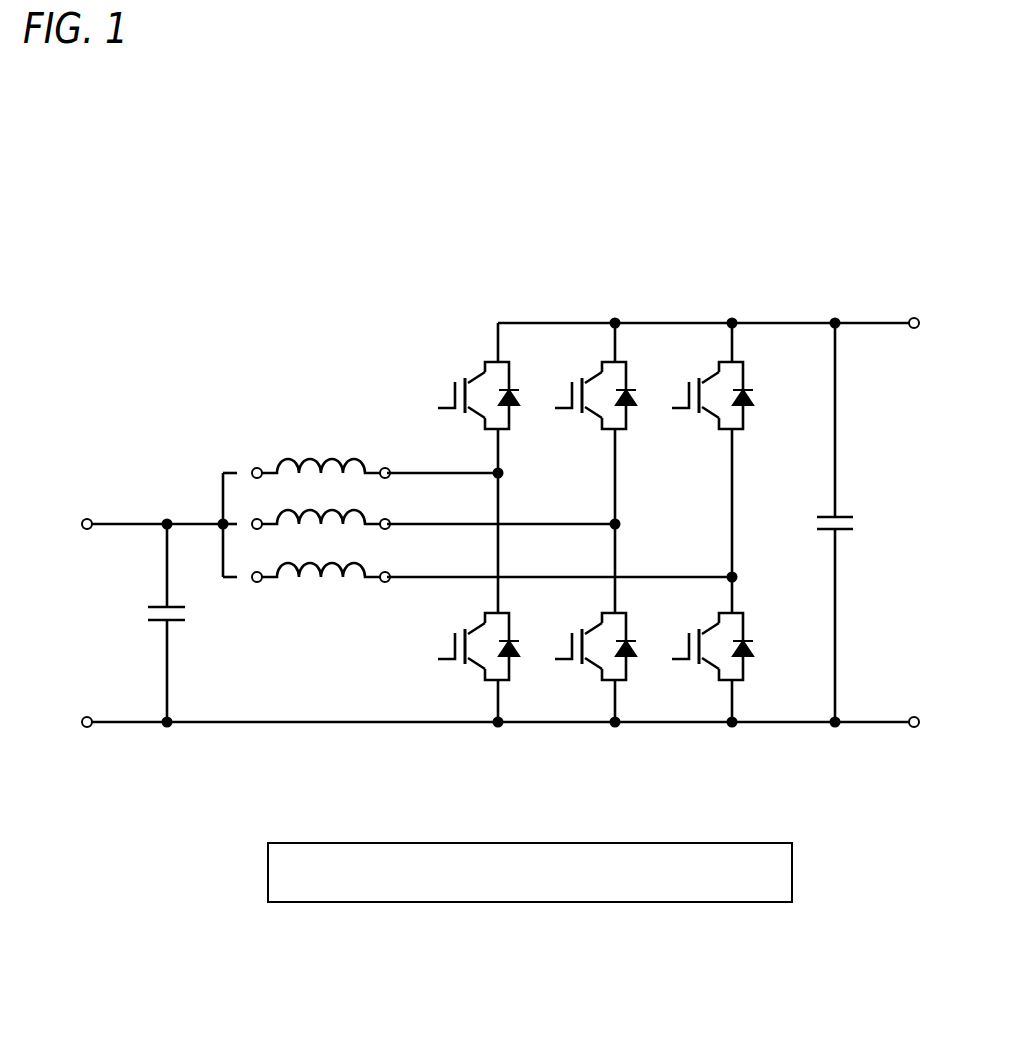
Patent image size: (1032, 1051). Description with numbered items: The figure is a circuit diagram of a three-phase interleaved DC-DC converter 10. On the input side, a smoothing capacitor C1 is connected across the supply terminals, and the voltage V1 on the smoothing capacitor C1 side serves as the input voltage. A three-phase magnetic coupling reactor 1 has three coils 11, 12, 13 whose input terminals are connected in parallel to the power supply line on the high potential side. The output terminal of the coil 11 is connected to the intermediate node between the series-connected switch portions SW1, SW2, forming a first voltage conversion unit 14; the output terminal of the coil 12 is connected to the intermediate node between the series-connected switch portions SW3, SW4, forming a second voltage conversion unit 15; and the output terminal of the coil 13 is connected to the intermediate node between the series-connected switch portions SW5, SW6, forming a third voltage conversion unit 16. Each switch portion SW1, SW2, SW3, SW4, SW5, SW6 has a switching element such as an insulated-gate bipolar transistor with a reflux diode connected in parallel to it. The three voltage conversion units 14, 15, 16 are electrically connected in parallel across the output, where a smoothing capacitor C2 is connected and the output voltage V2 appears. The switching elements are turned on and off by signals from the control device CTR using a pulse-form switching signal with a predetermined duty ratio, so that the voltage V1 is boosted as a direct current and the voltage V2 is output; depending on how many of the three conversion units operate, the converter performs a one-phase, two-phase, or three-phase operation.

The three-phase magnetic coupling reactor 1 is at (245, 415).
The three-phase interleaved DC-DC converter 10 is at (728, 160).
The coil 11 is at (332, 458).
The coil 12 is at (356, 508).
The coil 13 is at (342, 580).
The first voltage conversion unit 14 is at (472, 469).
The second voltage conversion unit 15 is at (577, 520).
The third voltage conversion unit 16 is at (593, 573).
The switch portion SW1 is at (472, 342).
The switch portion SW2 is at (472, 705).
The switch portion SW3 is at (588, 342).
The switch portion SW4 is at (588, 705).
The switch portion SW5 is at (700, 342).
The switch portion SW6 is at (700, 705).
The smoothing capacitor C1 is at (178, 622).
The smoothing capacitor C2 is at (830, 513).
The voltage V1 is at (86, 619).
The voltage V2 is at (909, 517).
The control device CTR is at (530, 872).